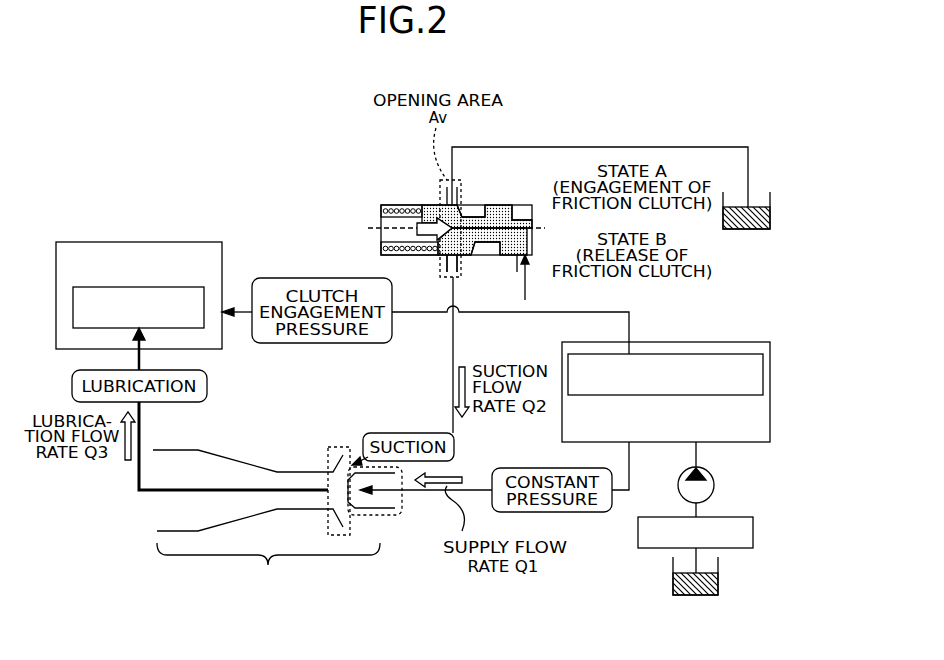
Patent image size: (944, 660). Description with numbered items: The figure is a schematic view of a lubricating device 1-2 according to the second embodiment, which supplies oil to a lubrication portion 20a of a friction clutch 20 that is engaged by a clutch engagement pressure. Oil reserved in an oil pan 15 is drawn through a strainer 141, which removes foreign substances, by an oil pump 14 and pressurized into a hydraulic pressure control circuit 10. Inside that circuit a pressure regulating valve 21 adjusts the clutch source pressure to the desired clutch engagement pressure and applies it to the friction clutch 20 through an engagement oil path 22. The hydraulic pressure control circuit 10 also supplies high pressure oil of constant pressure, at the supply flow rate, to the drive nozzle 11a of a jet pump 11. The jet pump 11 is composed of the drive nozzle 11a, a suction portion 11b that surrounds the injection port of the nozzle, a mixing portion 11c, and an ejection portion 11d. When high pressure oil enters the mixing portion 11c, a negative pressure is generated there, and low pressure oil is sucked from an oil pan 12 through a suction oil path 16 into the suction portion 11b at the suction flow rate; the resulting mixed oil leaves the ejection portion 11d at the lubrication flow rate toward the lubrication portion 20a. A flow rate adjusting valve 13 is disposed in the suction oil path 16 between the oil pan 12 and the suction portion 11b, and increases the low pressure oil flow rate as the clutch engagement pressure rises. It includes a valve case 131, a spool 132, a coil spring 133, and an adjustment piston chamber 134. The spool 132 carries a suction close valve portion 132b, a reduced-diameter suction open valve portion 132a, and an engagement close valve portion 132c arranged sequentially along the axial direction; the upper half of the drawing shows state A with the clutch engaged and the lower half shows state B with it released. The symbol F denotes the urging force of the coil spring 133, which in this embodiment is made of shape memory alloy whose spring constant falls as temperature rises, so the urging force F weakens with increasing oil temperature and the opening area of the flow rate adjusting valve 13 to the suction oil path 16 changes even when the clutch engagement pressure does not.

The lubricating device 1-2 is at (676, 116).
The hydraulic pressure control circuit 10 is at (724, 342).
The jet pump 11 is at (288, 496).
The drive nozzle 11a is at (392, 515).
The suction portion 11b is at (338, 447).
The mixing portion 11c is at (292, 472).
The ejection portion 11d is at (153, 450).
The oil pan 12 is at (748, 229).
The flow rate adjusting valve 13 is at (400, 197).
The valve case 131 is at (477, 205).
The spool 132 is at (495, 207).
The suction open valve portion 132a is at (487, 250).
The suction close valve portion 132b is at (442, 248).
The engagement close valve portion 132c is at (520, 248).
The coil spring 133 is at (392, 210).
The adjustment piston chamber 134 is at (522, 205).
The urging force F is at (410, 232).
The oil pump 14 is at (713, 474).
The strainer 141 is at (737, 517).
The oil pan 15 is at (718, 585).
The suction oil path 16 is at (610, 147).
The friction clutch 20 is at (173, 242).
The lubrication portion 20a is at (175, 287).
The pressure regulating valve 21 is at (670, 350).
The engagement oil path 22 is at (602, 312).